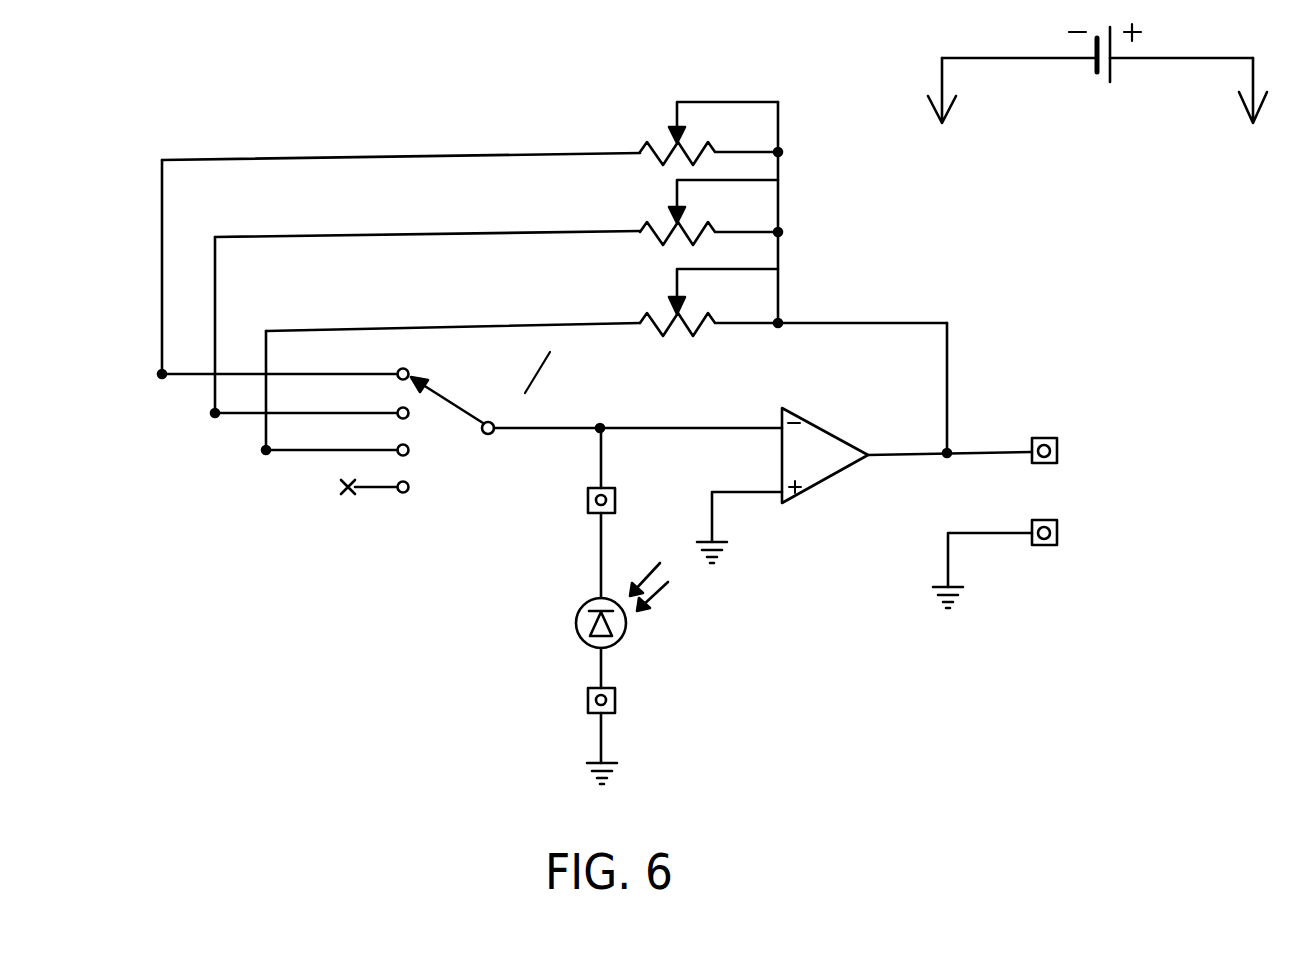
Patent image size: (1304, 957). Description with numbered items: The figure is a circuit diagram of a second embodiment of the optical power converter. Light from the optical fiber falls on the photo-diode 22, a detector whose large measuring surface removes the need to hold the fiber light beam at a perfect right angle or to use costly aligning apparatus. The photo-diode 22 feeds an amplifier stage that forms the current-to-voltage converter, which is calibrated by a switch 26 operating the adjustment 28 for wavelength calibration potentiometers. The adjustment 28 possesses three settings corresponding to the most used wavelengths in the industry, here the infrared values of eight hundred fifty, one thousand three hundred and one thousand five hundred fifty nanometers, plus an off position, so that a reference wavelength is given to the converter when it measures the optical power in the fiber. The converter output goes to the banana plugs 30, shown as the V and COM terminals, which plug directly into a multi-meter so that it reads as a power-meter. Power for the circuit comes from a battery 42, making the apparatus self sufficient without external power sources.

The photo-diode 22 is at (578, 628).
The switch 26 is at (370, 510).
The adjustment for wavelength calibration potentiometers 28 is at (792, 190).
The banana plugs 30 is at (1047, 428).
The battery 42 is at (1101, 132).